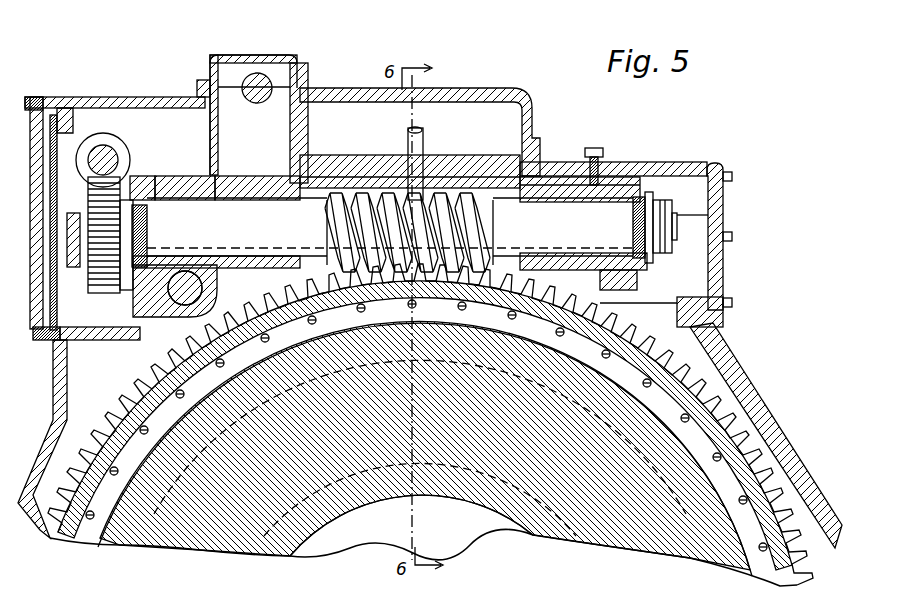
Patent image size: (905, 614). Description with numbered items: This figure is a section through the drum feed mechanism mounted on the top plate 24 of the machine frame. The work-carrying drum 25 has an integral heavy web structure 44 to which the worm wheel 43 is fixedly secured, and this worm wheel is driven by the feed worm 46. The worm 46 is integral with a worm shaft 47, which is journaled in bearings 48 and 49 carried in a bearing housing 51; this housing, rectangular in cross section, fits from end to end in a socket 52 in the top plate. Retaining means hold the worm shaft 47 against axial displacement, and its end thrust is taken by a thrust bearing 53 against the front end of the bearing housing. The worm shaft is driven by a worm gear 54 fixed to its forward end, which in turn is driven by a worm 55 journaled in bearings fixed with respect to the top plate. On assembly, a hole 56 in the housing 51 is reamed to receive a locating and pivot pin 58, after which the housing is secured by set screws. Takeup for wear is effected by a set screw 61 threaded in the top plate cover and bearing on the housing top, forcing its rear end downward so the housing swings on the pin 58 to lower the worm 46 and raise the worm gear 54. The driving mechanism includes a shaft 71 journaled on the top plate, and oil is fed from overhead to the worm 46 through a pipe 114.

The top plate 24 is at (448, 118).
The work-carrying drum 25 is at (358, 508).
The worm wheel 43 is at (800, 575).
The web structure 44 is at (430, 439).
The feed worm 46 is at (463, 192).
The worm shaft 47 is at (232, 222).
The bearing 48 is at (200, 186).
The bearing 49 is at (608, 183).
The bearing housing 51 is at (176, 201).
The socket 52 is at (343, 168).
The thrust bearing 53 is at (143, 197).
The worm gear 54 is at (110, 302).
The worm 55 is at (101, 145).
The hole 56 is at (197, 254).
The locating and pivot pin 58 is at (187, 280).
The set screw 61 is at (596, 146).
The shaft 71 is at (258, 80).
The pipe 114 is at (408, 150).